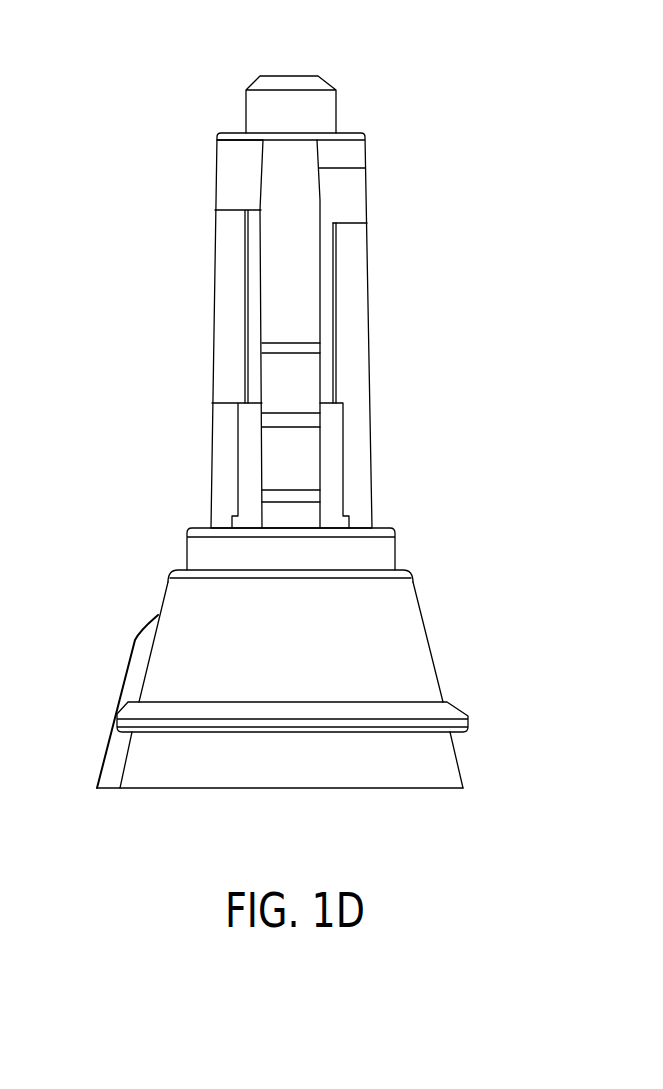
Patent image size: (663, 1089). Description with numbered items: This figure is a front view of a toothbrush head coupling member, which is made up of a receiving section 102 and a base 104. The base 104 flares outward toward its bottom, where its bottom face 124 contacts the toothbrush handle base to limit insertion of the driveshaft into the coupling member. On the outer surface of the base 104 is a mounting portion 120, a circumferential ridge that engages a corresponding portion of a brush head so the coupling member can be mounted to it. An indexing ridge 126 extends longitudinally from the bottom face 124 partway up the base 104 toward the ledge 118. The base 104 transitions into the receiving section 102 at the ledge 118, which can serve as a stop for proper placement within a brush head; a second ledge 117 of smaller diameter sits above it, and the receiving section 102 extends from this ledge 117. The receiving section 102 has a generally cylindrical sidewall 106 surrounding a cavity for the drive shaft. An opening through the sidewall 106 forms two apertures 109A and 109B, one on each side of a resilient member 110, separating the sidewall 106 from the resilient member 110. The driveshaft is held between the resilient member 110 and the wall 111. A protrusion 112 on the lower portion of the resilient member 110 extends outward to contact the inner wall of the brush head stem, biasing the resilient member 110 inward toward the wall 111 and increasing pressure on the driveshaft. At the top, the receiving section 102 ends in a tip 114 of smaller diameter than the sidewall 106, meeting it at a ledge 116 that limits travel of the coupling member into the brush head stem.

The receiving section 102 is at (336, 291).
The base 104 is at (295, 684).
The sidewall 106 is at (357, 331).
The aperture 109A is at (340, 278).
The aperture 109B is at (235, 249).
The resilient member 110 is at (277, 295).
The wall 111 is at (257, 358).
The protrusion 112 is at (305, 450).
The tip 114 is at (298, 75).
The ledge 116 is at (233, 133).
The second ledge 117 is at (380, 527).
The ledge 118 is at (405, 568).
The mounting portion 120 is at (450, 712).
The bottom face 124 is at (440, 790).
The indexing ridge 126 is at (122, 680).